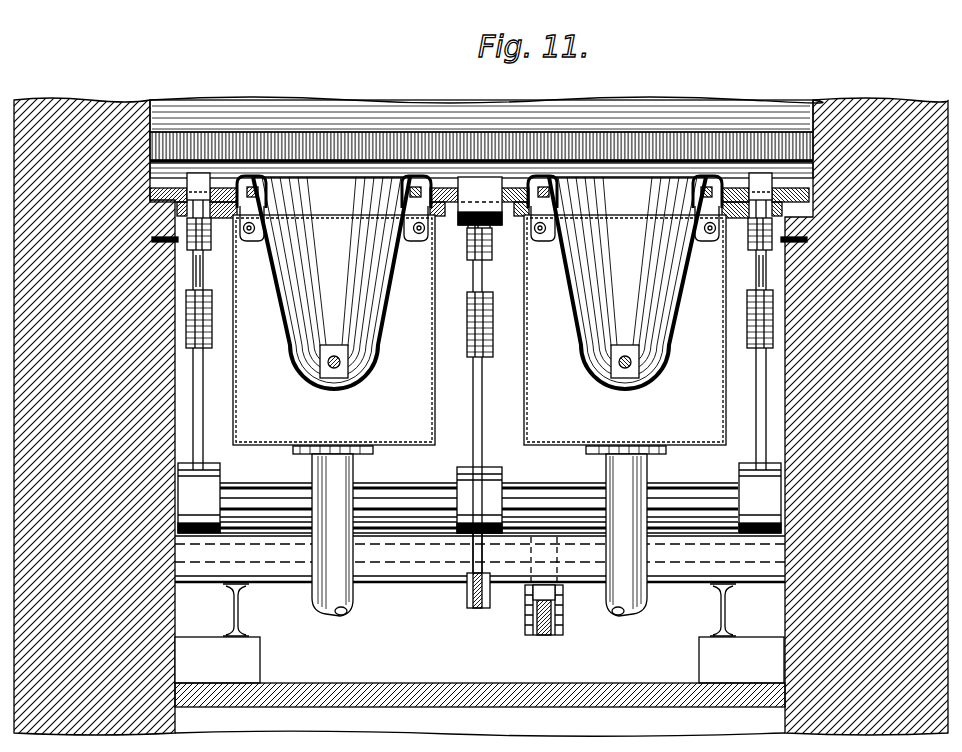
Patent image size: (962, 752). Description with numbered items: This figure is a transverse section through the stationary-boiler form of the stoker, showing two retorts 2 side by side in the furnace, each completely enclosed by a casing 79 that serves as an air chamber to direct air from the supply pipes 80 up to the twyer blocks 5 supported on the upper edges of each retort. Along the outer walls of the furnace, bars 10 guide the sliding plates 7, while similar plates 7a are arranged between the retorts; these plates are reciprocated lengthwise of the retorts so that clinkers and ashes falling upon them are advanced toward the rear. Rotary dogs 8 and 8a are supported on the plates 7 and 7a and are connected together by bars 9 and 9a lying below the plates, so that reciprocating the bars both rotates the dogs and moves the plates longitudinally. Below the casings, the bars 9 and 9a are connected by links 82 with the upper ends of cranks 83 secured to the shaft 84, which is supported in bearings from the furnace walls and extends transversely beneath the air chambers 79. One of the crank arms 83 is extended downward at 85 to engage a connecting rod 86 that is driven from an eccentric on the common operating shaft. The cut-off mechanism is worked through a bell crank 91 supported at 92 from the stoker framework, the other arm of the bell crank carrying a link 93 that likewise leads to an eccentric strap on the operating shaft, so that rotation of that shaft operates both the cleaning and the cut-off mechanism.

The retort 2 is at (322, 183).
The twyer block 5 is at (250, 183).
The sliding plate 7 is at (218, 190).
The sliding plate 7a is at (513, 193).
The rotary dog 8 is at (198, 183).
The rotary dog 8a is at (480, 187).
The bar 9 is at (205, 243).
The bar 9a is at (488, 248).
The bar 10 is at (170, 137).
The casing 79 is at (431, 403).
The supply pipe 80 is at (341, 606).
The link 82 is at (210, 302).
The crank 83 is at (196, 433).
The shaft 84 is at (428, 488).
The downward extension of crank arm 85 is at (480, 557).
The connecting rod 86 is at (478, 609).
The bell crank 91 is at (529, 590).
The bell crank support 92 is at (268, 547).
The link 93 is at (545, 636).